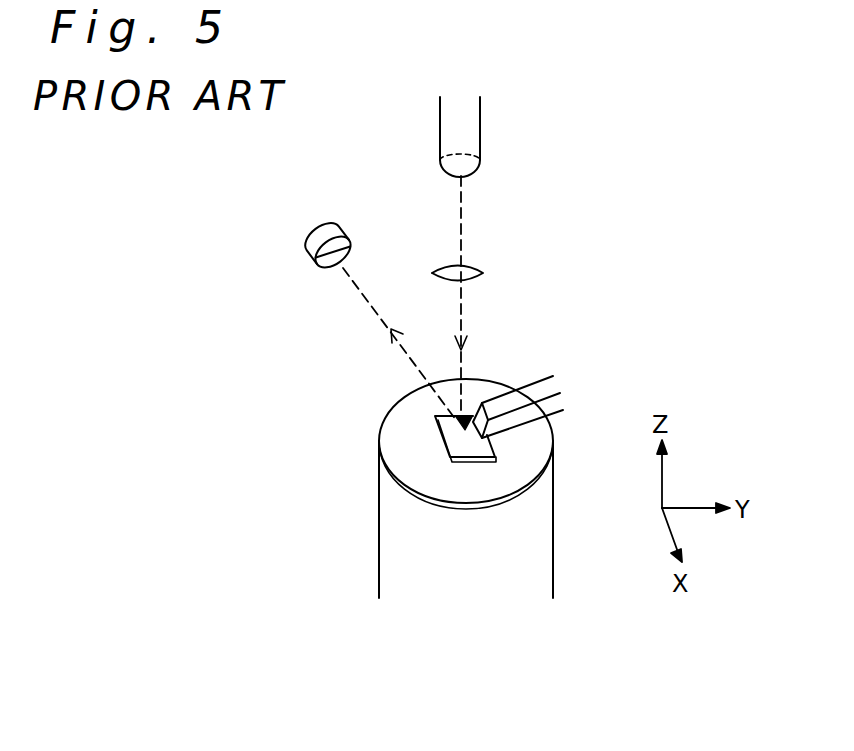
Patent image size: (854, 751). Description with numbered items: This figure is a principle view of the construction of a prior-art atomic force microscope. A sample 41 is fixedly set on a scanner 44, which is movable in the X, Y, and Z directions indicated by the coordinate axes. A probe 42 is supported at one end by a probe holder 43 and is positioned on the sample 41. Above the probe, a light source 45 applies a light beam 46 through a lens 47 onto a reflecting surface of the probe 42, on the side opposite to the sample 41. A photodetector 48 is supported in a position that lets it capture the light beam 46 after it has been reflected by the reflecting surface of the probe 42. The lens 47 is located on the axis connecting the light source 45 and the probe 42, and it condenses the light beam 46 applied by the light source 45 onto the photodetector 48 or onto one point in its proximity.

The sample 41 is at (440, 440).
The probe 42 is at (465, 430).
The probe holder 43 is at (532, 390).
The scanner 44 is at (379, 527).
The light source 45 is at (480, 122).
The light beam 46 is at (462, 208).
The lens 47 is at (483, 273).
The photodetector 48 is at (343, 230).